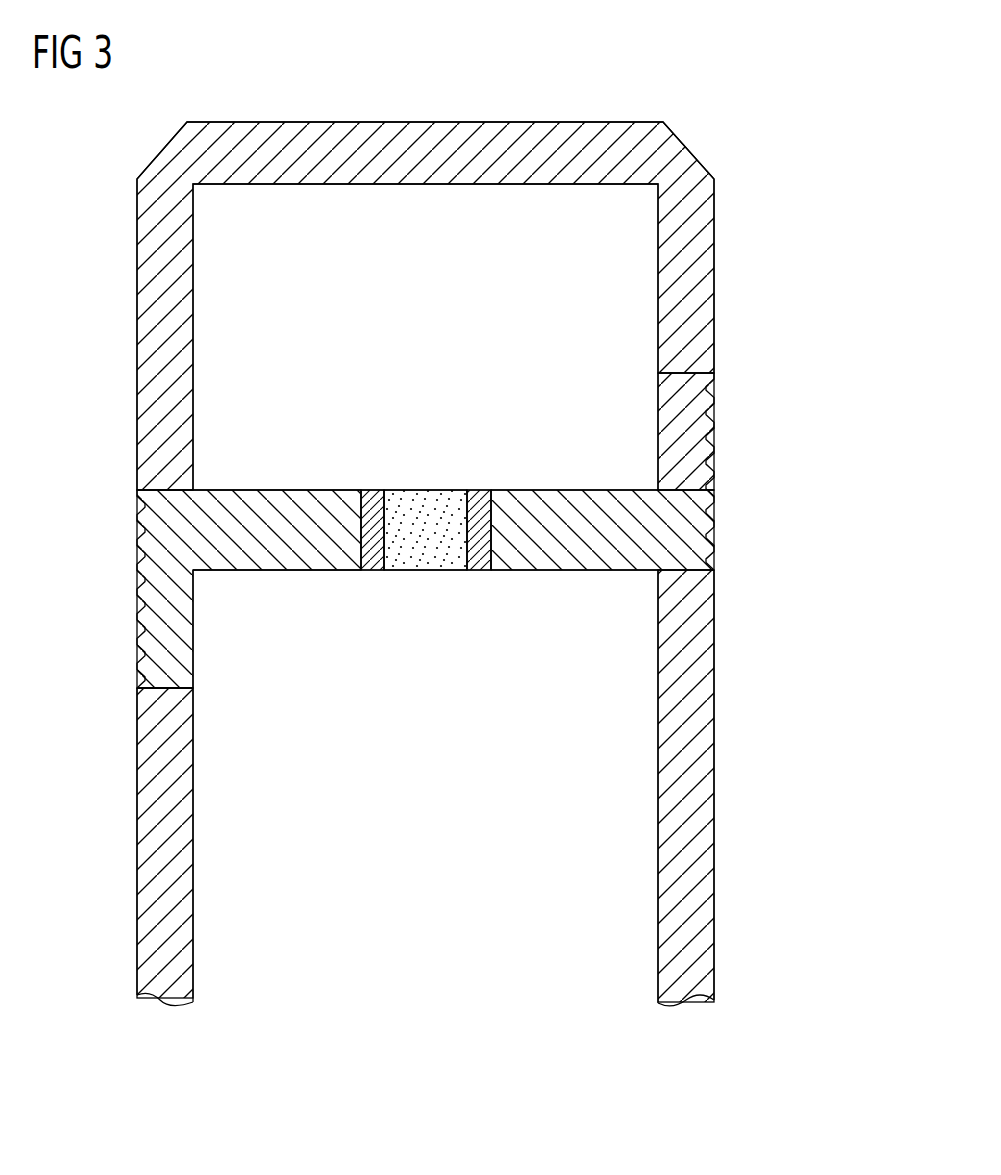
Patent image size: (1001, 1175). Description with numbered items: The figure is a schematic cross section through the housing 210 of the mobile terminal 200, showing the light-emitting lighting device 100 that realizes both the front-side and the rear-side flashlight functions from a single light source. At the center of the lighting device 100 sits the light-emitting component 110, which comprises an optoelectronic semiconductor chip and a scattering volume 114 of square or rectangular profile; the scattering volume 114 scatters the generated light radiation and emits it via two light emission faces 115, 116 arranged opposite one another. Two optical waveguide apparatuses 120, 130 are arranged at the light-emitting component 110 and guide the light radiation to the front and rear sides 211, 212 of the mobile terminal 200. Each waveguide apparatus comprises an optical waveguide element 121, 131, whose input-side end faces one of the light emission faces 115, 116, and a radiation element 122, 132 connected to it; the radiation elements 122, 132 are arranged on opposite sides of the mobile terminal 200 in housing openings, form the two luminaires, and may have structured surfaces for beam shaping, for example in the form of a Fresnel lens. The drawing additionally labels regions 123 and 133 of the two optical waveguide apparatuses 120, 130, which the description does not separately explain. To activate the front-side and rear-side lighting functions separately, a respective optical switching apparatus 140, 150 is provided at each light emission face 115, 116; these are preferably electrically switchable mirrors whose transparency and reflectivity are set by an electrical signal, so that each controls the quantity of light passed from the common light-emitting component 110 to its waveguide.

The lighting device 100 is at (426, 579).
The light-emitting component 110 is at (425, 521).
The scattering volume 114 is at (425, 565).
The light emission face 115 is at (470, 562).
The light emission face 116 is at (378, 562).
The optical waveguide apparatus 120 is at (646, 527).
The optical waveguide element 121 is at (568, 512).
The radiation element 122 is at (707, 488).
The threaded section 123 is at (708, 413).
The optical waveguide apparatus 130 is at (206, 557).
The optical waveguide element 131 is at (270, 515).
The radiation element 132 is at (145, 600).
The thread 133 is at (142, 528).
The optical switching apparatus 140 is at (482, 536).
The optical switching apparatus 150 is at (369, 536).
The mobile terminal 200 is at (453, 532).
The housing 210 is at (257, 122).
The front side 211 is at (706, 898).
The rear side 212 is at (146, 896).